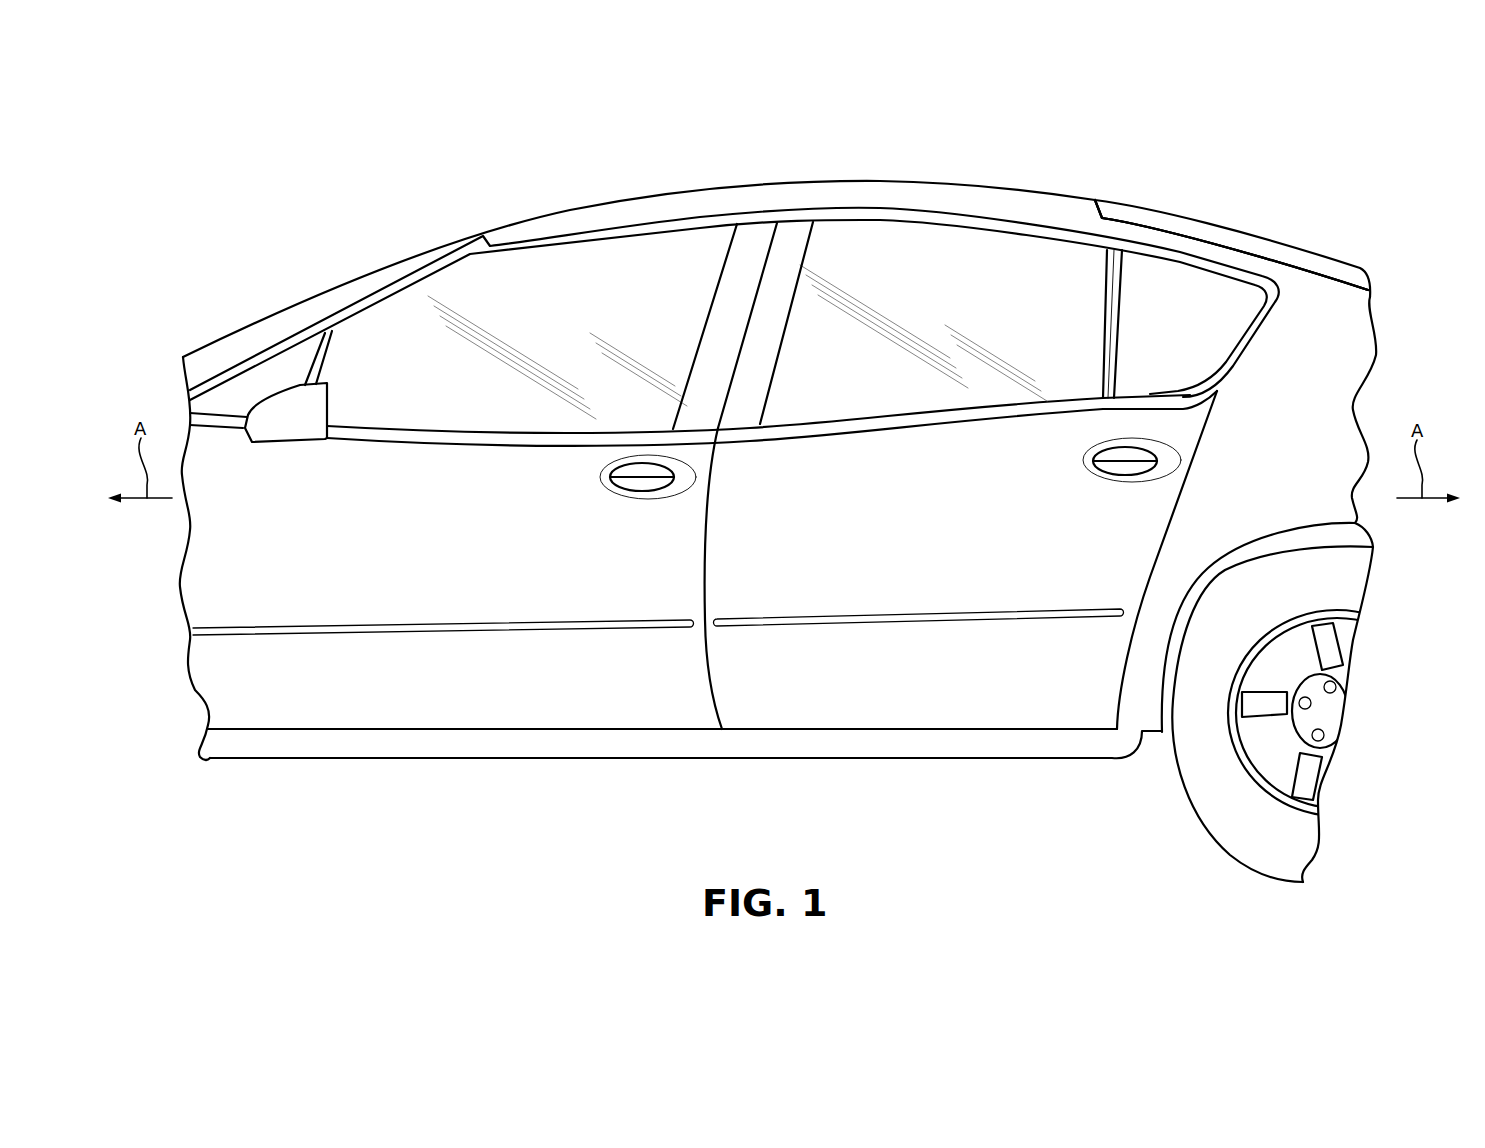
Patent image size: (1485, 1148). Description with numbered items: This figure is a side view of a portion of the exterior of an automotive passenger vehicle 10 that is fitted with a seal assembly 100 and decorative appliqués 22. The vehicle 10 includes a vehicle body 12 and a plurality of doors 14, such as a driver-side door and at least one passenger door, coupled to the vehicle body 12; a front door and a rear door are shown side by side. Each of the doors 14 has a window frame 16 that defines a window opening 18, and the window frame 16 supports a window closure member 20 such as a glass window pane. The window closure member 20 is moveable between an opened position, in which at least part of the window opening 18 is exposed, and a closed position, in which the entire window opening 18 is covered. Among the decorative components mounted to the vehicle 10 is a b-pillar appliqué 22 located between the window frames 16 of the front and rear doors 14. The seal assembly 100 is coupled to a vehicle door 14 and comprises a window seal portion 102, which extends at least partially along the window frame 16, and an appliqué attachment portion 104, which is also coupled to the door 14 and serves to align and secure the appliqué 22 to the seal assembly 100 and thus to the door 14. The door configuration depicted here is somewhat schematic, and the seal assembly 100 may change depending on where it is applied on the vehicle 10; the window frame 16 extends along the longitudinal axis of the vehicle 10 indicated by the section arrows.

The vehicle 10 is at (1260, 182).
The vehicle body 12 is at (1327, 353).
The doors 14 is at (457, 710).
The window frame 16 is at (560, 254).
The window opening 18 is at (658, 256).
The window closure member 20 is at (370, 340).
The appliqué 22 is at (707, 387).
The seal assembly 100 is at (830, 232).
The window seal portion 102 is at (830, 232).
The appliqué attachment portion 104 is at (830, 232).